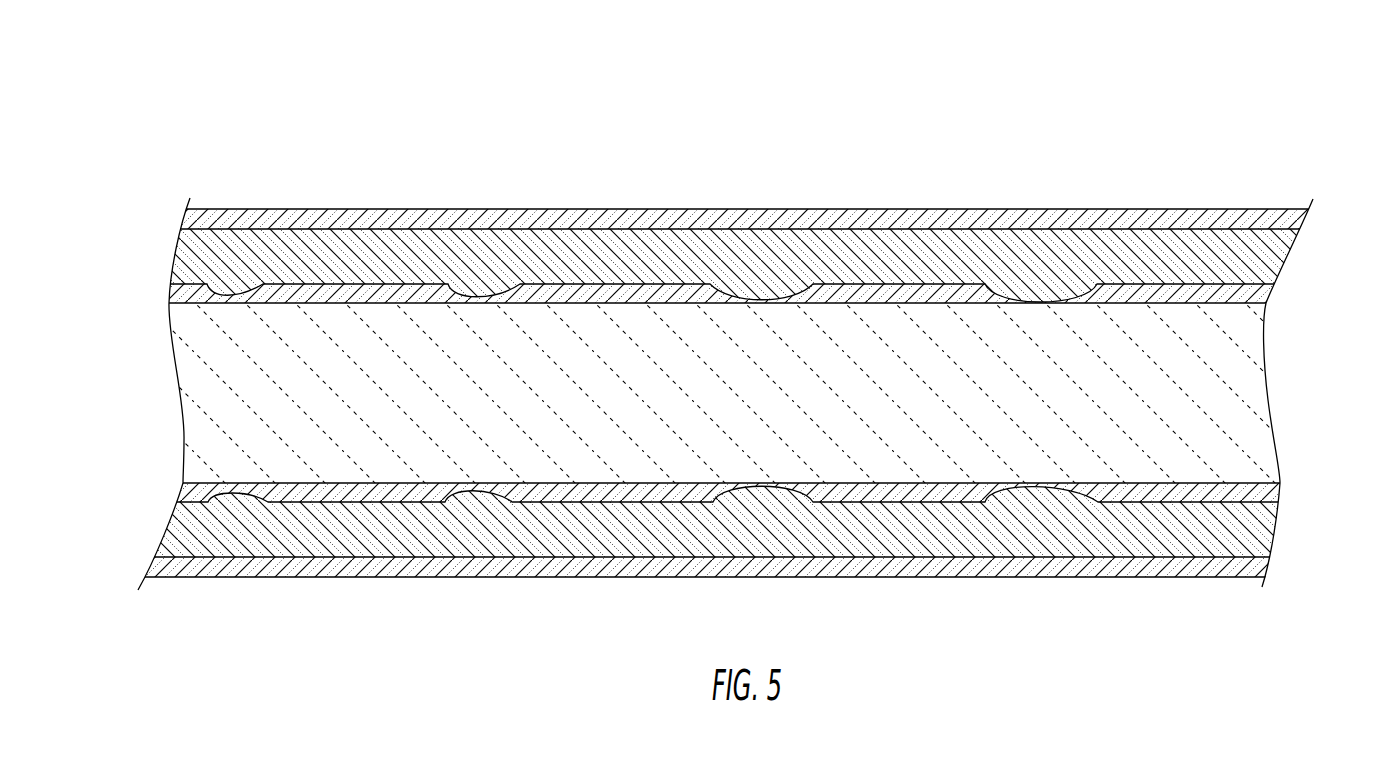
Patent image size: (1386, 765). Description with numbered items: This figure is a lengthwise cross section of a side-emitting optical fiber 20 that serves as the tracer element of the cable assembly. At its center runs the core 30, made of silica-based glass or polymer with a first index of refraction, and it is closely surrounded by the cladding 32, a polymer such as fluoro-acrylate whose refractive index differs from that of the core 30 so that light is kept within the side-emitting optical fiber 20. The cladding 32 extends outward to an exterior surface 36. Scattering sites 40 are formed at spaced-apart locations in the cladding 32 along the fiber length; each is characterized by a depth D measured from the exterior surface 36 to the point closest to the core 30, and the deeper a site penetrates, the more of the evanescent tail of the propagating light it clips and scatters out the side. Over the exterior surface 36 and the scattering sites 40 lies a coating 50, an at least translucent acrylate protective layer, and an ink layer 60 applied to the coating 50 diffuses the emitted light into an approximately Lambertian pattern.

The side-emitting optical fiber 20 is at (753, 359).
The core 30 is at (591, 403).
The cladding 32 is at (1266, 293).
The exterior surface 36 is at (943, 503).
The scattering sites 40 is at (478, 278).
The coating 50 is at (753, 241).
The ink layer 60 is at (735, 585).
The depth D is at (835, 297).